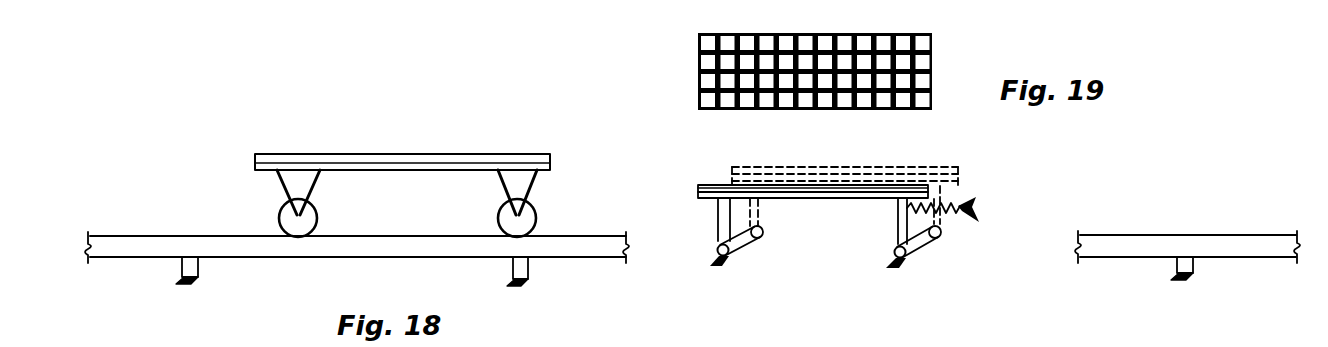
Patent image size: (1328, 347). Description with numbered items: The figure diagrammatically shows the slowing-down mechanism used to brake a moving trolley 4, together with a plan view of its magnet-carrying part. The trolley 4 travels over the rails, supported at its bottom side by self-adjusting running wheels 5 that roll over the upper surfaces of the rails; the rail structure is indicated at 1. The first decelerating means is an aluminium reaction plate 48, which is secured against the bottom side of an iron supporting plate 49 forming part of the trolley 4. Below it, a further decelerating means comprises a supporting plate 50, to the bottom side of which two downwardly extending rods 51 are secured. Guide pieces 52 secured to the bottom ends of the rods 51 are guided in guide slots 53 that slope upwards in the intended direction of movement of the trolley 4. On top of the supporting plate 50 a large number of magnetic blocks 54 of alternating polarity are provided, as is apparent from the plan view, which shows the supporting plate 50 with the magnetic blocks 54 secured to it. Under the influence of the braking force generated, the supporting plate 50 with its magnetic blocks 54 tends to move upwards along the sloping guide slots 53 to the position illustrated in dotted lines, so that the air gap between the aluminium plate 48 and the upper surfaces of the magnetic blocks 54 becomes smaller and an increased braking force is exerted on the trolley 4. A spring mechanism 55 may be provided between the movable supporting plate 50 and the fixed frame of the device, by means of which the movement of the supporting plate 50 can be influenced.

In FIG. 18, the floor / support surface 1 is at (318, 296).
In FIG. 18, the trolley 4 is at (306, 146).
In FIG. 18, the self-adjusting running wheels 5 is at (288, 221).
In FIG. 18, the aluminium reaction plate 48 is at (424, 170).
In FIG. 18, the iron supporting plate 49 is at (535, 162).
In FIG. 19, the supporting plate 50 is at (817, 199).
In FIG. 19, the rods 51 is at (720, 230).
In FIG. 19, the guide pieces 52 is at (720, 255).
In FIG. 19, the guide slots 53 is at (748, 258).
In FIG. 19, the magnetic blocks 54 is at (698, 97).
In FIG. 19, the spring mechanism 55 is at (955, 207).